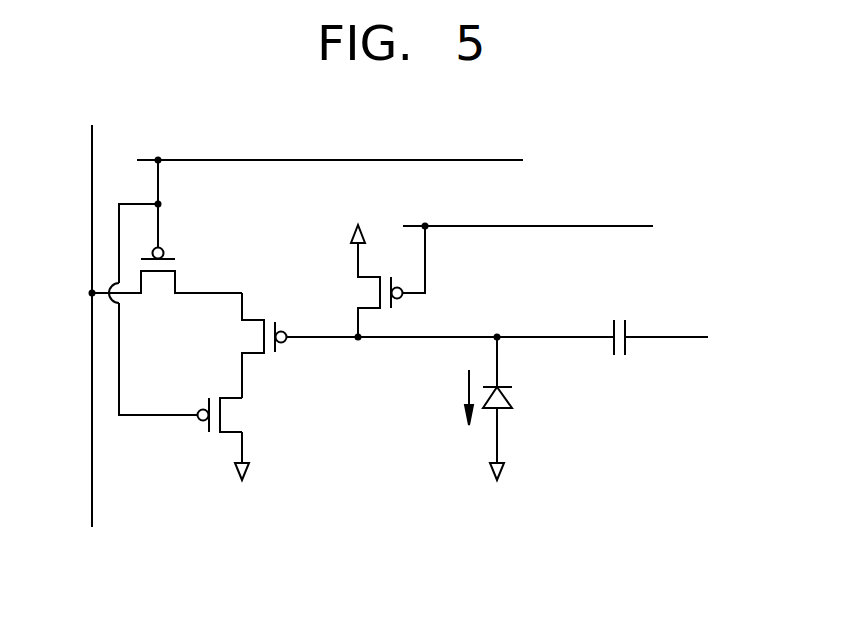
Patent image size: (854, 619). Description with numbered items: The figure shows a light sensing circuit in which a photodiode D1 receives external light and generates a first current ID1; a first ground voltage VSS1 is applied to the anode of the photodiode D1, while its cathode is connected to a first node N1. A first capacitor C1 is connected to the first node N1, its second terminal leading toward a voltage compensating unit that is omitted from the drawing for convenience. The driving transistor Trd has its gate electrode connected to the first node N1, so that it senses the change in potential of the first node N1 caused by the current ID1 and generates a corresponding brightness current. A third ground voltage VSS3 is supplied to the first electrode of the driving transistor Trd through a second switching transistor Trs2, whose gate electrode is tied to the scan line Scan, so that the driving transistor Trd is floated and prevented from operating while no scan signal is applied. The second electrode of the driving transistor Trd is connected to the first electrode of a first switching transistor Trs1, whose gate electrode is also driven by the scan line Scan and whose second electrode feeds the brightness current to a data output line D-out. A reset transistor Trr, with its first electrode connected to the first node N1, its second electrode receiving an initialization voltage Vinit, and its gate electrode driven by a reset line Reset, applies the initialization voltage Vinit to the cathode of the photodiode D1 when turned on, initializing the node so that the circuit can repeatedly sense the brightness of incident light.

The first switching transistor Trs1 is at (167, 241).
The second switching transistor Trs2 is at (199, 318).
The driving transistor Trd is at (248, 345).
The reset transistor Trr is at (379, 283).
The first capacitor C1 is at (659, 322).
The photodiode D1 is at (515, 400).
The first node N1 is at (497, 322).
The first current ID1 is at (452, 397).
The first ground voltage VSS1 is at (496, 487).
The third ground voltage VSS3 is at (241, 472).
The initialization voltage Vinit is at (356, 221).
The scan line Scan is at (362, 158).
The reset line Reset is at (563, 225).
The data output line D-out is at (92, 340).